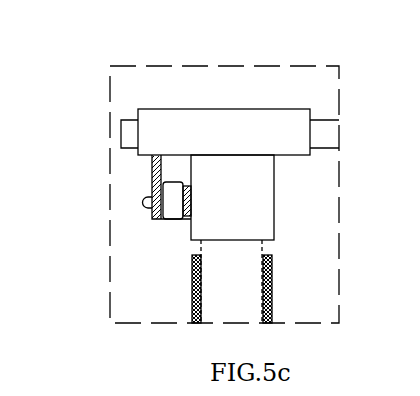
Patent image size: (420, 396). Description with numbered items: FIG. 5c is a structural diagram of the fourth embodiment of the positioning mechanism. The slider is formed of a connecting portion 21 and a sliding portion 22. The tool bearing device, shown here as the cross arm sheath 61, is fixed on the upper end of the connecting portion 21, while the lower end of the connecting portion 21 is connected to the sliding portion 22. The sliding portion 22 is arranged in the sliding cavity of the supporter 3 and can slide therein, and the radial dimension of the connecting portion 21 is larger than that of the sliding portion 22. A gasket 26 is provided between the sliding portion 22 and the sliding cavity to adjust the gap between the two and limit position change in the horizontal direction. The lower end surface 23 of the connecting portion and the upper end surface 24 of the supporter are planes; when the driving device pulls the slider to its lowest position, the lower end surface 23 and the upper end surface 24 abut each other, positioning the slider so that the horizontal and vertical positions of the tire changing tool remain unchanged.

The cross arm sheath 61 is at (226, 120).
The connecting portion 21 is at (267, 184).
The sliding portion 22 is at (250, 255).
The lower end surface of the connecting portion 23 is at (191, 240).
The upper end surface of the supporter 24 is at (195, 257).
The gasket 26 is at (272, 288).
The supporter 3 is at (272, 308).